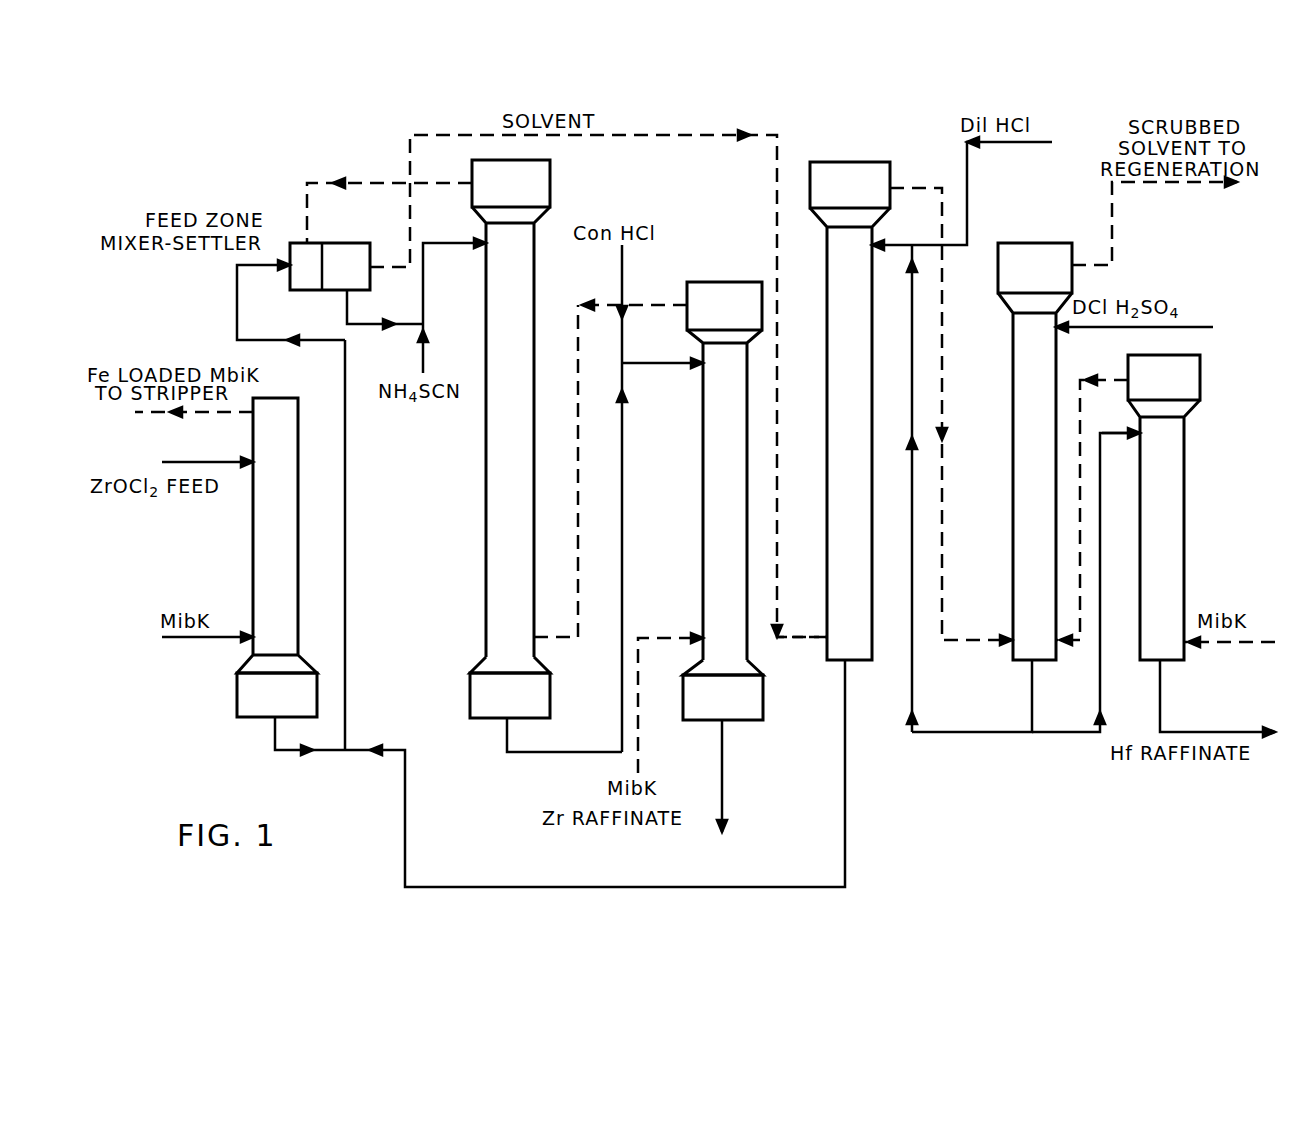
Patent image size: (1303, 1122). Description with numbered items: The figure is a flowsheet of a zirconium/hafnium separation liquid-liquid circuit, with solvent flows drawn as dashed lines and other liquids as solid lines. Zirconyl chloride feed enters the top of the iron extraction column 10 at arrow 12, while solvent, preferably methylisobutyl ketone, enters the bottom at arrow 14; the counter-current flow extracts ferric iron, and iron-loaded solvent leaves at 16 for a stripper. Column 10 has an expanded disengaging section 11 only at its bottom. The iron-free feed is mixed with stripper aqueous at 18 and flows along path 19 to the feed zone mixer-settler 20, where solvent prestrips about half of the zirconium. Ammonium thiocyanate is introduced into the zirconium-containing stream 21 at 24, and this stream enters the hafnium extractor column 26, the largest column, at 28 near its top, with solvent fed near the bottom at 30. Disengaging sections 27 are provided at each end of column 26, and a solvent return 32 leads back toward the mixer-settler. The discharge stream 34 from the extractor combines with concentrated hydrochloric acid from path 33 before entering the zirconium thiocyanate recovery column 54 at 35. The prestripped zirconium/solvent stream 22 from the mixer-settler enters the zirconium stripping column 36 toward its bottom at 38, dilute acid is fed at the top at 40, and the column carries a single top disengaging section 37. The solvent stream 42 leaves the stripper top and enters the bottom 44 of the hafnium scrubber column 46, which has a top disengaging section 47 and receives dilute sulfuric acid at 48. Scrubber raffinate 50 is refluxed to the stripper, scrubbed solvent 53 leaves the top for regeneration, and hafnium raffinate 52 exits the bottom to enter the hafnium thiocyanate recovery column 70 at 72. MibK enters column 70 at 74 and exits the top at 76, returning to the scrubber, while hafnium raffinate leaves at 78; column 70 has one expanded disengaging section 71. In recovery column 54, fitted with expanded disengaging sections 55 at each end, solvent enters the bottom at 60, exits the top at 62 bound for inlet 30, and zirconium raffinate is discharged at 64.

The iron extraction column 10 is at (253, 535).
The expanded disengaging section 11 is at (290, 705).
The ZrOCl2 feed arrow 12 is at (202, 462).
The solvent inlet arrow 14 is at (197, 637).
The iron-loaded solvent exit 16 is at (212, 412).
The stripper aqueous mixing point 18 is at (345, 750).
The path to mixer-settler 19 is at (237, 312).
The feed zone mixer-settler 20 is at (358, 280).
The zirconium-containing stream 21 is at (345, 316).
The prestripped zirconium/solvent stream 22 is at (408, 270).
The ammonium thiocyanate inlet 24 is at (423, 352).
The hafnium extractor column 26 is at (486, 430).
The disengaging section 27 is at (525, 195).
The hafnium extractor feed inlet 28 is at (470, 242).
The hafnium extractor solvent inlet 30 is at (570, 648).
The solvent line to mixer-settler 32 is at (375, 185).
The concentrated acid path 33 is at (622, 363).
The hafnium extractor discharge stream 34 is at (600, 752).
The recovery column inlet 35 is at (660, 348).
The zirconium stripping column 36 is at (827, 280).
The disengaging section 37 is at (864, 197).
The zirconium stripper inlet 38 is at (803, 640).
The dilute acid inlet 40 is at (967, 197).
The solvent stream 42 is at (917, 188).
The hafnium scrubber bottom 44 is at (912, 243).
The hafnium scrubber column 46 is at (1013, 348).
The top disengaging section 47 is at (1050, 279).
The sulfuric acid inlet 48 is at (1118, 330).
The scrubber raffinate 50 is at (990, 732).
The hafnium raffinate stream 52 is at (1063, 732).
The scrubbed solvent stream 53 is at (1100, 267).
The zirconium thiocyanate recovery column 54 is at (703, 425).
The expanded disengaging sections 55 is at (736, 318).
The recovery column solvent inlet 60 is at (690, 636).
The recovery column solvent outlet 62 is at (633, 305).
The zirconium raffinate outlet 64 is at (722, 755).
The hafnium thiocyanate recovery column 70 is at (1140, 485).
The expanded disengaging section 71 is at (1178, 389).
The hafnium raffinate inlet 72 is at (1102, 437).
The MibK inlet 74 is at (1232, 645).
The solvent exit 76 is at (1112, 380).
The hafnium raffinate exit 78 is at (1180, 732).